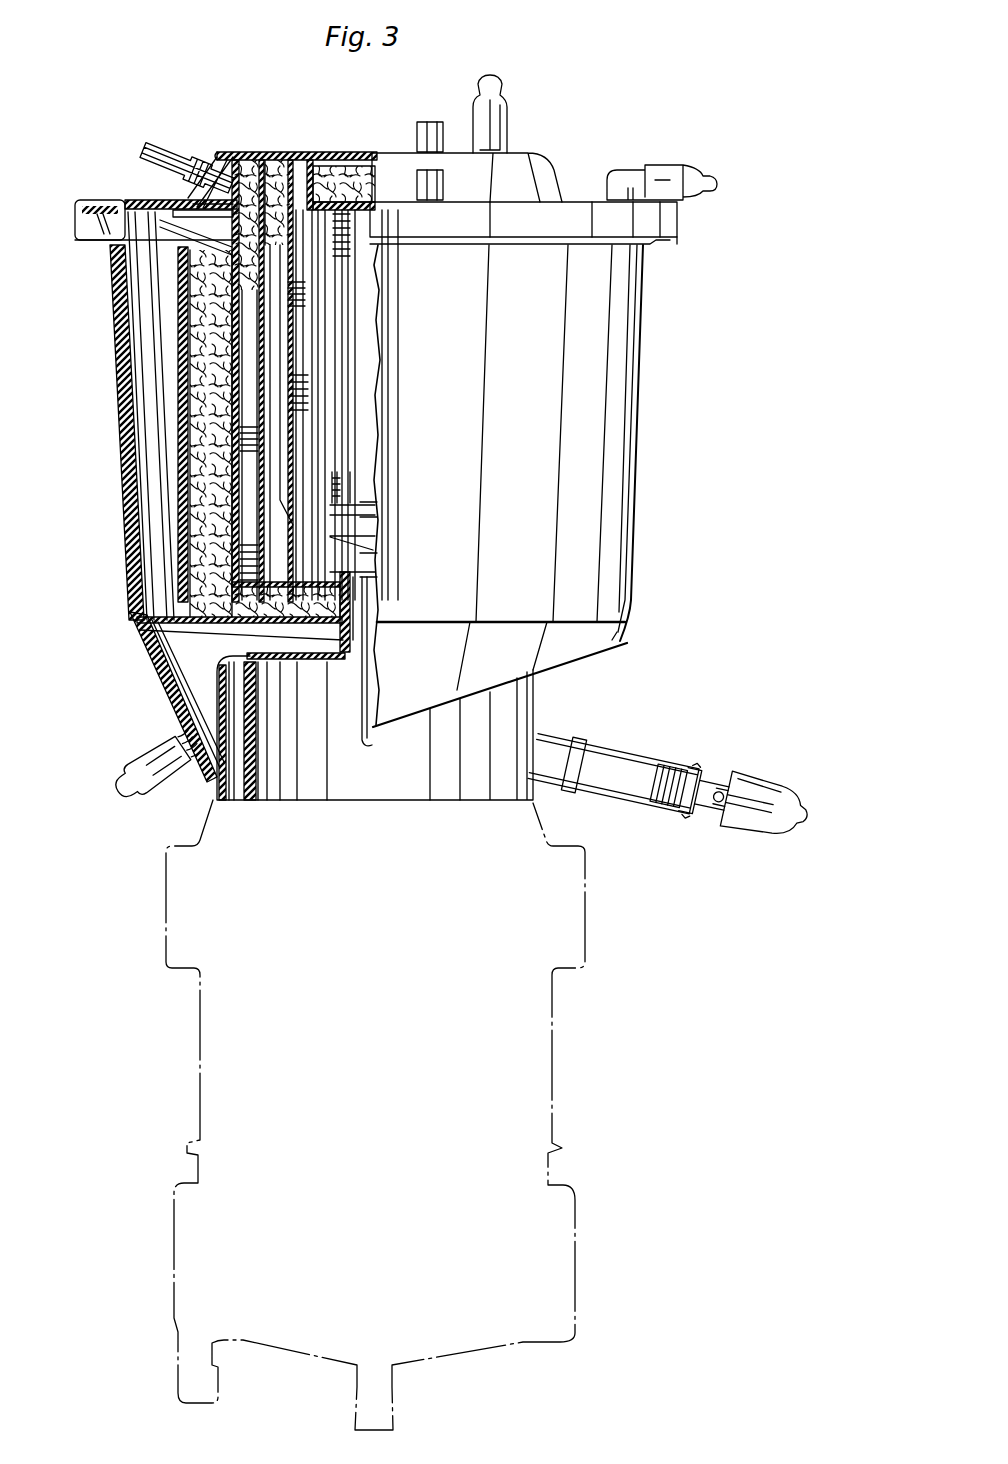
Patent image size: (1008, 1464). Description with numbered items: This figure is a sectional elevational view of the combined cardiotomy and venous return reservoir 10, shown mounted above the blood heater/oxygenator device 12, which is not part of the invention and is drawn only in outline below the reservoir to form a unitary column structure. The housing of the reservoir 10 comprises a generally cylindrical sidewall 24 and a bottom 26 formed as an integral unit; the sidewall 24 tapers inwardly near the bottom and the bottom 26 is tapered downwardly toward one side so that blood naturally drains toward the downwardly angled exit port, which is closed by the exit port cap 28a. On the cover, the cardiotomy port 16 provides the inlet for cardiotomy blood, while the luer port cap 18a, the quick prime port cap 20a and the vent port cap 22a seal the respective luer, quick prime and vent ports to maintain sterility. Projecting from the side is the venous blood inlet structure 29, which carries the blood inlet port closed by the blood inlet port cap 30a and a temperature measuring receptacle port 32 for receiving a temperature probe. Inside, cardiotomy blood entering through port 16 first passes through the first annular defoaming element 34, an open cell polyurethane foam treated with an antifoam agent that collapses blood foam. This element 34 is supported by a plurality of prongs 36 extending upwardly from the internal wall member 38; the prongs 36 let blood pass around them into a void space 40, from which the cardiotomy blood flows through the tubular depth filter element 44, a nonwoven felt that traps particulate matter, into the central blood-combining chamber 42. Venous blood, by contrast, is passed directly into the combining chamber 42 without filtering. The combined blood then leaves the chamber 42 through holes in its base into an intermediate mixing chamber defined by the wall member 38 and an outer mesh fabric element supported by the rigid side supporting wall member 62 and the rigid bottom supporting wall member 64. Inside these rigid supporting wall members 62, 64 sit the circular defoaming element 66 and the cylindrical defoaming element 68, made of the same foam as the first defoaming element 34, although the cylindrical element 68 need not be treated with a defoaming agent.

The combined cardiotomy and venous return reservoir 10 is at (666, 336).
The blood heater/oxygenator device 12 is at (570, 1095).
The cardiotomy port 16 is at (185, 148).
The luer port cap 18a is at (416, 180).
The quick prime port cap 20a is at (507, 110).
The vent port cap 22a is at (667, 168).
The sidewall 24 is at (633, 544).
The bottom 26 is at (571, 657).
The exit port cap 28a is at (135, 758).
The venous blood inlet structure 29 is at (620, 754).
The blood inlet port cap 30a is at (766, 774).
The temperature measuring receptacle port 32 is at (700, 803).
The first annular defoaming element 34 is at (257, 172).
The prongs 36 is at (272, 240).
The internal wall member 38 is at (250, 305).
The void space 40 is at (270, 250).
The central blood-combining chamber 42 is at (362, 525).
The tubular depth filter element 44 is at (280, 275).
The rigid side supporting wall member 62 is at (183, 494).
The rigid bottom supporting wall member 64 is at (192, 618).
The circular defoaming element 66 is at (352, 605).
The cylindrical defoaming element 68 is at (195, 464).